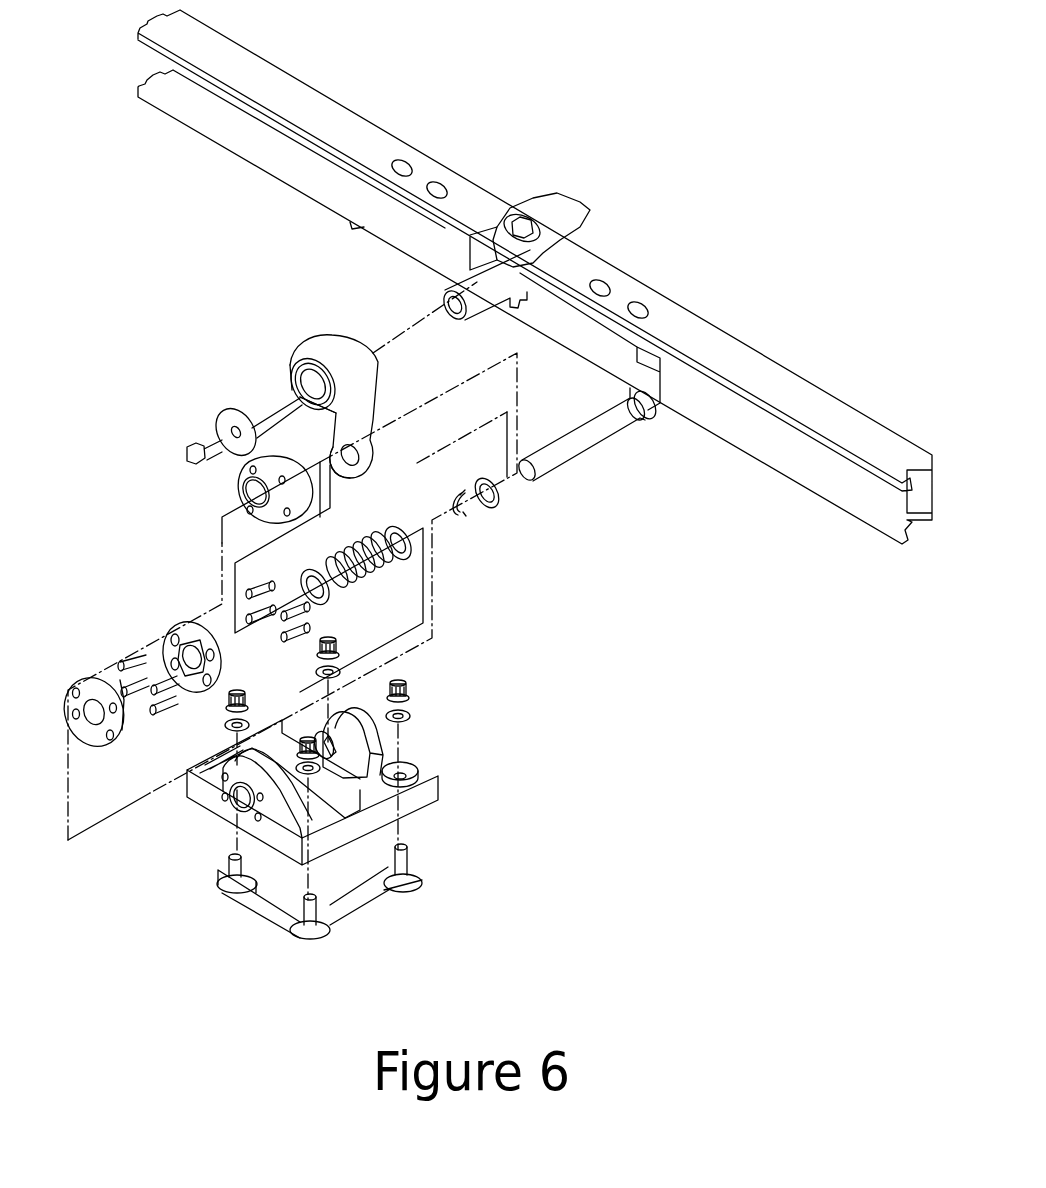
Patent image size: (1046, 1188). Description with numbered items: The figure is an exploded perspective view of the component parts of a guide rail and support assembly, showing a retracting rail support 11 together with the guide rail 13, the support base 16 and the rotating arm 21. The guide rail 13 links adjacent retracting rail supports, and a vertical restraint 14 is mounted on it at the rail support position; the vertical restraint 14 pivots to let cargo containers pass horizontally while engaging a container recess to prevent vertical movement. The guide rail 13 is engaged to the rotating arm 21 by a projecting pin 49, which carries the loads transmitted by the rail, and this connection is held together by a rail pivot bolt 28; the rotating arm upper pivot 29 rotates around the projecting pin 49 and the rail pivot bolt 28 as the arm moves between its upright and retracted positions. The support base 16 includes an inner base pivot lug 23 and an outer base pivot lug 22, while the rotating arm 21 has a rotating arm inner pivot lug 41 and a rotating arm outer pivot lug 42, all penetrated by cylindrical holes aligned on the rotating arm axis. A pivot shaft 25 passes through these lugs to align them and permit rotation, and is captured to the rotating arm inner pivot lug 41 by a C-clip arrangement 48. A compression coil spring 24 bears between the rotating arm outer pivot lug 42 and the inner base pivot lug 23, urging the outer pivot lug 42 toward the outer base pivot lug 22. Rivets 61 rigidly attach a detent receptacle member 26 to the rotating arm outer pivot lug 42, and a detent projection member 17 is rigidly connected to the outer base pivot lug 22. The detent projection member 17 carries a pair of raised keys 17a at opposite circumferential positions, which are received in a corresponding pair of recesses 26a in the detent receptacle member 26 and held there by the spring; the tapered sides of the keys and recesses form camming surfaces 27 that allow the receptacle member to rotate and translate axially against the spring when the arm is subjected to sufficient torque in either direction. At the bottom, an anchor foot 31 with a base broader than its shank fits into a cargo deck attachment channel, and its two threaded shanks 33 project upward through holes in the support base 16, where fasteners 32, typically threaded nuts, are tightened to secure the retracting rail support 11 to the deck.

The retracting rail support 11 is at (222, 291).
The guide rail 13 is at (285, 80).
The vertical restraint 14 is at (560, 206).
The support base 16 is at (325, 838).
The detent projection member 17 is at (98, 738).
The raised keys 17a is at (98, 680).
The rotating arm 21 is at (372, 428).
The outer base pivot lug 22 is at (216, 788).
The inner base pivot lug 23 is at (333, 721).
The compression coil spring 24 is at (373, 573).
The pivot shaft 25 is at (582, 440).
The detent receptacle member 26 is at (212, 640).
The recesses 26a is at (187, 682).
The camming surfaces 27 is at (183, 633).
The rail pivot bolt 28 is at (188, 452).
The rotating arm upper pivot 29 is at (333, 362).
The anchor foot 31 is at (412, 888).
The fasteners 32 is at (337, 638).
The threaded shanks 33 is at (312, 912).
The rotating arm inner pivot lug 41 is at (370, 455).
The rotating arm outer pivot lug 42 is at (272, 508).
The C-clip arrangement 48 is at (464, 523).
The projecting pin 49 is at (468, 288).
The rivets 61 is at (292, 637).